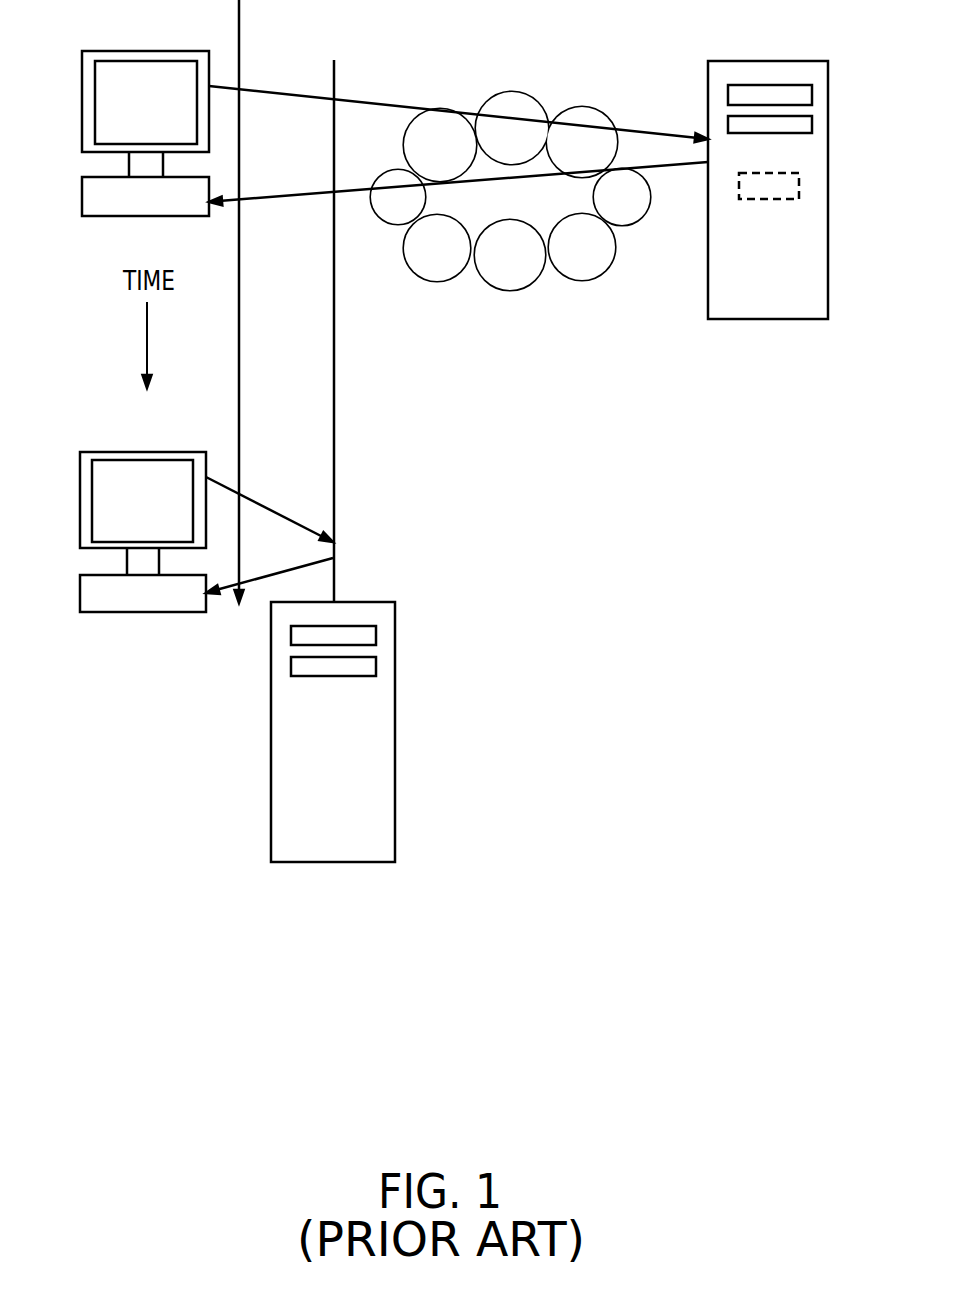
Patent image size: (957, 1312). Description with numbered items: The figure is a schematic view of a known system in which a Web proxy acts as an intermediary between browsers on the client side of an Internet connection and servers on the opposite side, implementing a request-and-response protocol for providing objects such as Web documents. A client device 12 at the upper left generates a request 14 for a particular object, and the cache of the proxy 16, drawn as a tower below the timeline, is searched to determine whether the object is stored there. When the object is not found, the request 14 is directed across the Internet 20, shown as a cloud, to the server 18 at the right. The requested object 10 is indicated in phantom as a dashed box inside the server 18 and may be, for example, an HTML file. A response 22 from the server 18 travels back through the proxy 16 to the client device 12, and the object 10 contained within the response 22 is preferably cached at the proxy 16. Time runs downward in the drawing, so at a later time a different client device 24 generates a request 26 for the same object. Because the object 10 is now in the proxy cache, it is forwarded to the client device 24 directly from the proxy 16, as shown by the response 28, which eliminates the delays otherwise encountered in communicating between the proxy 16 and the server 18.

The requested object 10 is at (800, 189).
The client device 12 is at (140, 50).
The request 14 is at (310, 92).
The proxy 16 is at (395, 767).
The server 18 is at (797, 218).
The Internet 20 is at (530, 287).
The response 22 is at (300, 196).
The client device 24 is at (90, 450).
The request 26 is at (265, 502).
The response 28 is at (258, 582).